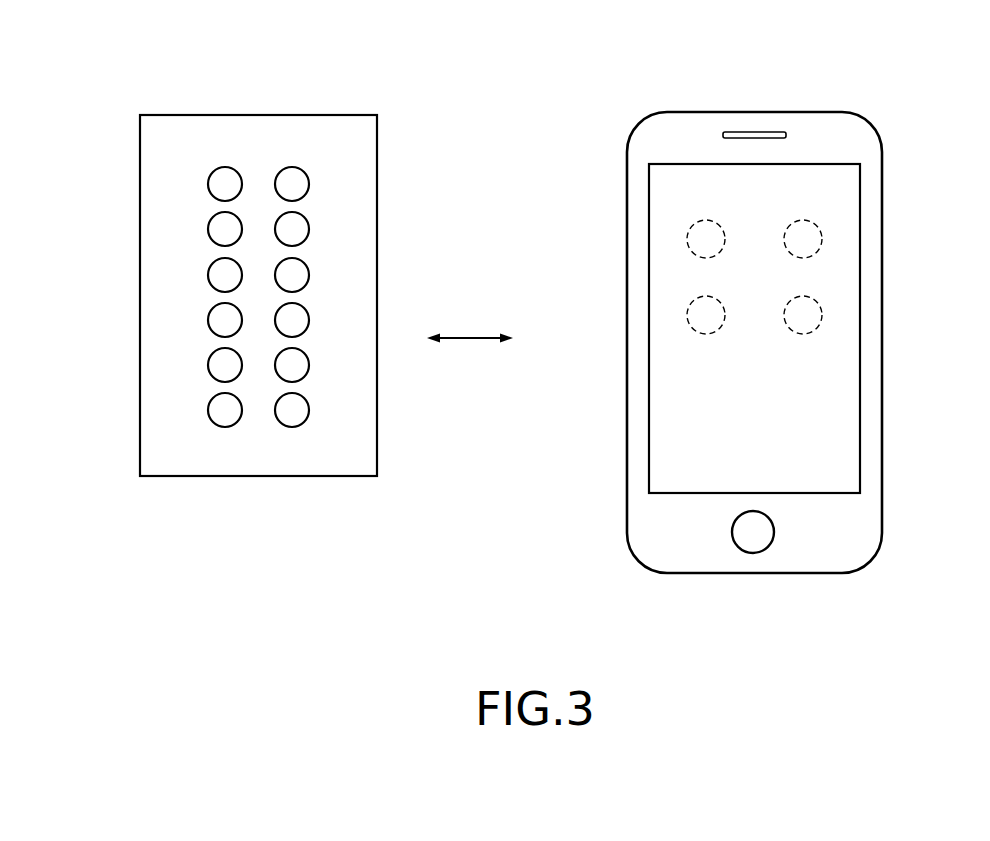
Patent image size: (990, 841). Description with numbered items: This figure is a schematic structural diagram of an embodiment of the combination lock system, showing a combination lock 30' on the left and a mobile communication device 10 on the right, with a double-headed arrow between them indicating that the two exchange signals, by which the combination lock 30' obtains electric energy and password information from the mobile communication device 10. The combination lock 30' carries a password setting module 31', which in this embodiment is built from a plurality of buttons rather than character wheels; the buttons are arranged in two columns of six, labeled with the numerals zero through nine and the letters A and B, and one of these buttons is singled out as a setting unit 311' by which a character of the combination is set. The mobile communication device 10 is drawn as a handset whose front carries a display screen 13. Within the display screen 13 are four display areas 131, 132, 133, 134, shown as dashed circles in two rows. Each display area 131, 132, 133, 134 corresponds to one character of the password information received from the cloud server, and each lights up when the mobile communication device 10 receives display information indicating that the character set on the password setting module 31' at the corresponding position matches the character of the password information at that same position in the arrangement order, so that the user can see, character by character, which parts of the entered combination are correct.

The combination lock 30' is at (266, 260).
The password setting module 31' is at (258, 236).
The setting unit 311' is at (147, 357).
The mobile communication device 10 is at (829, 128).
The display screen 13 is at (843, 188).
The display area 131 is at (676, 239).
The display area 132 is at (835, 237).
The display area 133 is at (676, 315).
The display area 134 is at (835, 313).